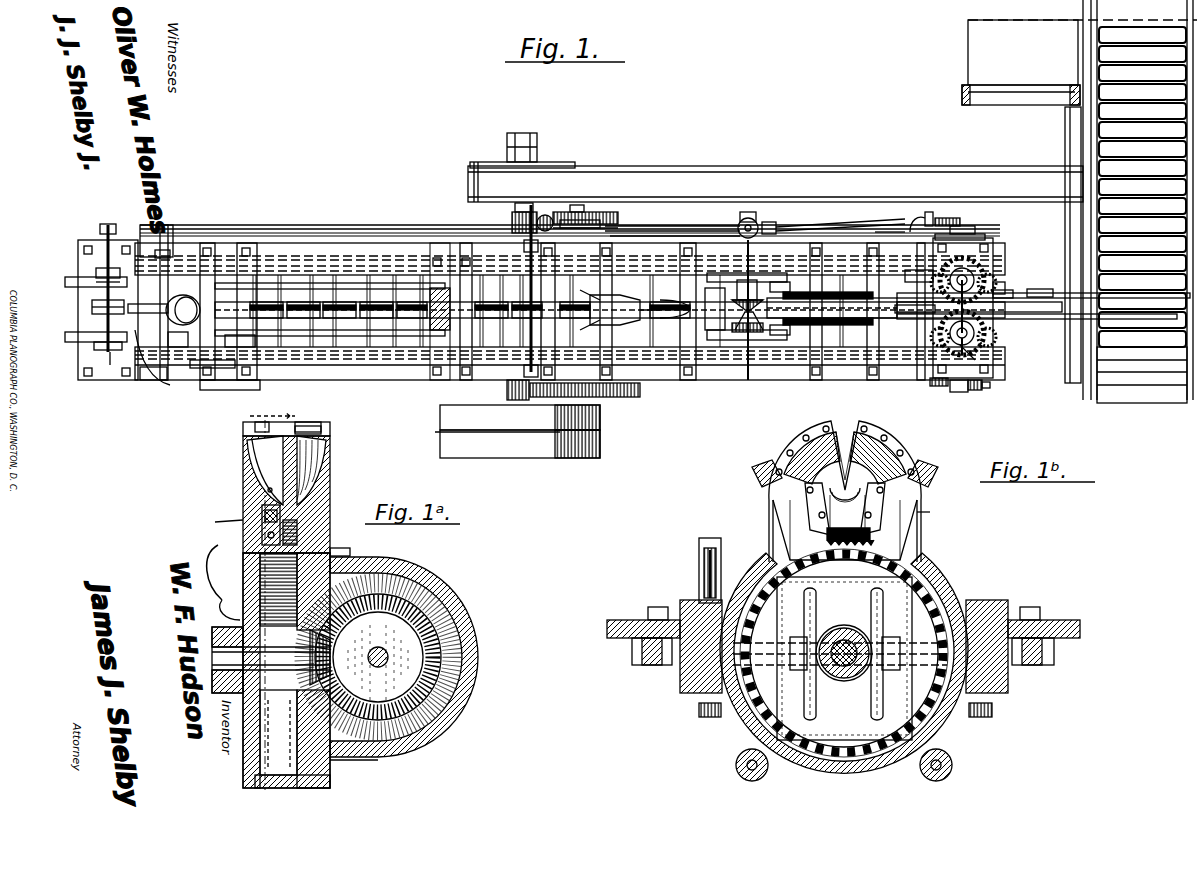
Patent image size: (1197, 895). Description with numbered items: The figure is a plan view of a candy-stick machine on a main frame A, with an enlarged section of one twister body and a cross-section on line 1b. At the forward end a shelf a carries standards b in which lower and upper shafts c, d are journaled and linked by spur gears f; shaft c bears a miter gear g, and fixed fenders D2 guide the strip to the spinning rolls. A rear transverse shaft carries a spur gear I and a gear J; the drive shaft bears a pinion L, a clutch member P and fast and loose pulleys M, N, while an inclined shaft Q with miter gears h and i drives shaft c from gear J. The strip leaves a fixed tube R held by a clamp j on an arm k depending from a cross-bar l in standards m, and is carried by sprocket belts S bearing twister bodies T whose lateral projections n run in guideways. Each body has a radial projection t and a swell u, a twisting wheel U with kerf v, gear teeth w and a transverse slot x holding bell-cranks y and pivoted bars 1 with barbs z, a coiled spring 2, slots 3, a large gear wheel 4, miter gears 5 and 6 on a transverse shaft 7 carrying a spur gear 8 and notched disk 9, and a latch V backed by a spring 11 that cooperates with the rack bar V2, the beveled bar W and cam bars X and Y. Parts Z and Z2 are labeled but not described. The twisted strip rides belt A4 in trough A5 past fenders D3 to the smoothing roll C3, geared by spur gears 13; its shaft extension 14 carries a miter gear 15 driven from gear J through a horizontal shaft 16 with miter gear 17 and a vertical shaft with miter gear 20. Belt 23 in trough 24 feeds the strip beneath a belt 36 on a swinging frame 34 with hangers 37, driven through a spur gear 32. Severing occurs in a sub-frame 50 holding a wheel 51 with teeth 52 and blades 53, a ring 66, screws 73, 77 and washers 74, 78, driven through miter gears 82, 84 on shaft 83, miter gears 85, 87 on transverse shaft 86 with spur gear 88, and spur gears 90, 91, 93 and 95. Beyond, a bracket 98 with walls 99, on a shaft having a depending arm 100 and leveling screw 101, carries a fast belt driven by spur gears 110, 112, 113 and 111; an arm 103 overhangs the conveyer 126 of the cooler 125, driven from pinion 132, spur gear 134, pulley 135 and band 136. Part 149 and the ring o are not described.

In FIG. 1, the band 136 is at (775, 184).
In FIG. 1, the pulley 135 is at (487, 160).
In FIG. 1, the pinion 132 is at (536, 163).
In FIG. 1, the miter gear h is at (548, 214).
In FIG. 1, the spur gear 134 is at (510, 222).
In FIG. 1, the gear J is at (534, 205).
In FIG. 1, the fixed rear cam bars Y is at (590, 212).
In FIG. 1, the fixed longitudinal bar W is at (288, 208).
In FIG. 1, the longitudinal inclined shaft Q is at (343, 210).
In FIG. 1, the sprocket belts S is at (380, 256).
In FIG. 1B, the sprocket belts S is at (645, 665).
In FIG. 1, the main shaft Z is at (300, 303).
In FIG. 1, the twister bodies T is at (207, 380).
In FIG. 1B, the twister bodies T is at (855, 651).
In FIG. 1, the shelf a is at (78, 243).
In FIG. 1, the upper transverse shaft d is at (108, 352).
In FIG. 1, the miter gear g is at (104, 224).
In FIG. 1, the standards b is at (70, 277).
In FIG. 1, the lower transverse shaft c is at (96, 282).
In FIG. 1, the fixed fenders D2 is at (92, 305).
In FIG. 1, the spur gears f is at (75, 342).
In FIG. 1, the clamp j is at (110, 365).
In FIG. 1, the miter gear i is at (148, 225).
In FIG. 1, the standards m is at (162, 250).
In FIG. 1, the cross-bar l is at (166, 240).
In FIG. 1, the fixed tube R is at (180, 325).
In FIG. 1, the arm k is at (150, 313).
In FIG. 1, the radial projection t is at (178, 347).
In FIG. 1A, the radial projection t is at (330, 552).
In FIG. 1B, the radial projection t is at (930, 512).
In FIG. 1, the latches V is at (190, 340).
In FIG. 1A, the latches V is at (218, 560).
In FIG. 1B, the latches V is at (704, 538).
In FIG. 1, the main frame A is at (250, 268).
In FIG. 1, the fixed forward cam bars X is at (170, 385).
In FIG. 1, the fixed longitudinal rack bar V2 is at (240, 347).
In FIG. 1, the shaft guard Z2 is at (380, 336).
In FIG. 1, the longitudinal trough A5 is at (625, 322).
In FIG. 1, the spur gear I is at (620, 397).
In FIG. 1, the spur pinion L is at (500, 398).
In FIG. 1, the clutch member P is at (510, 398).
In FIG. 1, the fast pulley M is at (560, 417).
In FIG. 1, the loose pulley N is at (567, 444).
In FIG. 1, the shaft extension 14 is at (745, 260).
In FIG. 1, the smoothing and shaping roll C3 is at (760, 290).
In FIG. 1, the fenders D3 is at (740, 340).
In FIG. 1, the spur gears 13 is at (750, 340).
In FIG. 1, the spur gear 32 is at (780, 335).
In FIG. 1, the fixed longitudinal trough 24 is at (850, 320).
In FIG. 1, the longitudinal belt A4 is at (715, 330).
In FIG. 1, the miter gear 82 is at (752, 220).
In FIG. 1, the miter gear 84 is at (776, 226).
In FIG. 1, the horizontal shaft 83 is at (845, 228).
In FIG. 1, the miter gear 20 is at (746, 212).
In FIG. 1, the miter gear 15 is at (730, 240).
In FIG. 1, the horizontal shaft 16 is at (680, 236).
In FIG. 1, the miter gear 17 is at (600, 240).
In FIG. 1, the spur gear 88 is at (889, 231).
In FIG. 1, the vertically swinging frame 34 is at (855, 300).
In FIG. 1, the hangers 37 is at (800, 290).
In FIG. 1, the belt 36 is at (845, 328).
In FIG. 1, the transverse shaft 86 is at (905, 272).
In FIG. 1, the spur-gear teeth 52 is at (932, 283).
In FIG. 1, the ring 66 is at (932, 337).
In FIG. 1, the longitudinal belt 23 is at (915, 306).
In FIG. 1, the screw 73 is at (962, 278).
In FIG. 1, the washer 74 is at (961, 306).
In FIG. 1, the washer 78 is at (962, 333).
In FIG. 1, the screw 77 is at (962, 355).
In FIG. 1, the blades 53 is at (995, 279).
In FIG. 1, the sub-frame 50 is at (995, 345).
In FIG. 1, the wheel 51 is at (975, 360).
In FIG. 1, the spur gear 90 is at (1005, 285).
In FIG. 1, the depending arm 100 is at (1013, 293).
In FIG. 1, the miter gear 85 is at (930, 212).
In FIG. 1, the spur gear 91 is at (914, 218).
In FIG. 1, the miter gear 87 is at (945, 218).
In FIG. 1, the spur gear 95 is at (960, 226).
In FIG. 1, the spur gear 93 is at (985, 237).
In FIG. 1, the spur gear 110 is at (938, 386).
In FIG. 1, the spur gear 112 is at (958, 392).
In FIG. 1, the spur gear 113 is at (975, 390).
In FIG. 1, the spur gear 111 is at (990, 385).
In FIG. 1, the arm 103 is at (1140, 292).
In FIG. 1, the walls 99 is at (1048, 284).
In FIG. 1, the screw 101 is at (979, 306).
In FIG. 1, the bracket 98 is at (1010, 319).
In FIG. 1, the conveyer 126 is at (1175, 400).
In FIG. 1, the box 149 is at (1023, 52).
In FIG. 1, the cooler 125 is at (962, 98).
In FIG. 1A, the section line 1b is at (272, 603).
In FIG. 1A, the transverse slots 3 is at (245, 430).
In FIG. 1B, the transverse slots 3 is at (775, 495).
In FIG. 1A, the strip-engaging and twisting wheel U is at (243, 468).
In FIG. 1B, the strip-engaging and twisting wheel U is at (790, 455).
In FIG. 1A, the longitudinal kerf v is at (300, 460).
In FIG. 1B, the longitudinal kerf v is at (845, 460).
In FIG. 1A, the peripheral gear teeth w is at (321, 432).
In FIG. 1B, the peripheral gear teeth w is at (805, 518).
In FIG. 1A, the barbs z is at (267, 492).
In FIG. 1A, the coiled spring 2 is at (280, 510).
In FIG. 1B, the coiled spring 2 is at (844, 649).
In FIG. 1A, the transverse slot x is at (297, 525).
In FIG. 1B, the transverse slot x is at (905, 460).
In FIG. 1A, the transverse shaft 7 is at (214, 526).
In FIG. 1B, the transverse shaft 7 is at (930, 655).
In FIG. 1A, the spring 11 is at (225, 627).
In FIG. 1B, the spring 11 is at (704, 572).
In FIG. 1A, the pivoted bars 1 is at (375, 640).
In FIG. 1B, the pivoted bars 1 is at (825, 540).
In FIG. 1A, the miter gear 5 is at (275, 740).
In FIG. 1B, the miter gear 5 is at (848, 628).
In FIG. 1A, the swell u is at (460, 720).
In FIG. 1B, the swell u is at (740, 735).
In FIG. 1A, the large gear wheel 4 is at (340, 765).
In FIG. 1B, the large gear wheel 4 is at (940, 600).
In FIG. 1A, the ring gear o is at (425, 620).
In FIG. 1B, the miter gear 6 is at (800, 625).
In FIG. 1B, the lateral projections n is at (607, 628).
In FIG. 1B, the disk 9 is at (699, 710).
In FIG. 1B, the spur gear 8 is at (992, 710).
In FIG. 1B, the bell-cranks y is at (752, 477).